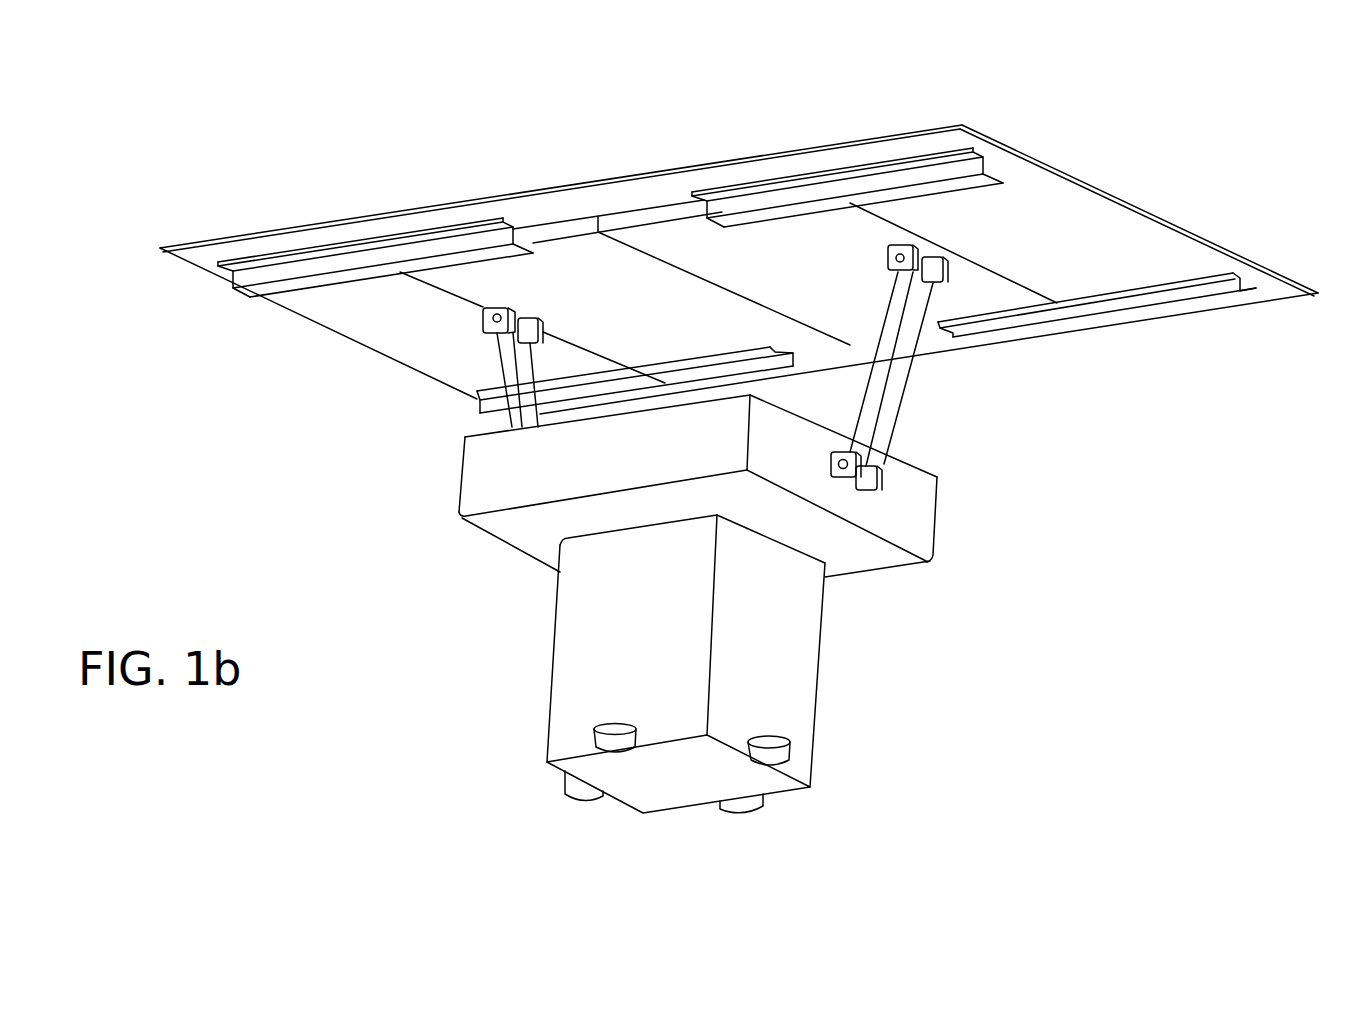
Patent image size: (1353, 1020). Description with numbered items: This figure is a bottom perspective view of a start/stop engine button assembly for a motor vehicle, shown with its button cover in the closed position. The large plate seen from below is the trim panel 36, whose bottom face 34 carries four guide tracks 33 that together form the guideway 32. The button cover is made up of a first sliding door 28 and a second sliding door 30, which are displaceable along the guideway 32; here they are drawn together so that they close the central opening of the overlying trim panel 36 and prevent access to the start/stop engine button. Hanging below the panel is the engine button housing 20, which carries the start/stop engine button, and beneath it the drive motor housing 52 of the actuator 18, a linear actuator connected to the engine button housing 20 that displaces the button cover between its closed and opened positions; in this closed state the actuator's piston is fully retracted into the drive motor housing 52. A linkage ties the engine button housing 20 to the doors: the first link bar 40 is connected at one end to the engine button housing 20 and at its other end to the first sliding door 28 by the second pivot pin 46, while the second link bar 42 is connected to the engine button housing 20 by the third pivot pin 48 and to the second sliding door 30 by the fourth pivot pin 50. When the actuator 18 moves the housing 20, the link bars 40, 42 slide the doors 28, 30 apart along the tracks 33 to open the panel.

The actuator 18 is at (497, 712).
The engine button housing 20 is at (480, 483).
The first sliding door 28 is at (670, 326).
The second sliding door 30 is at (813, 281).
The guideway 32 is at (452, 402).
The guide tracks 33 is at (740, 203).
The bottom face 34 is at (1110, 232).
The trim panel 36 is at (917, 127).
The first link bar 40 is at (507, 365).
The second link bar 42 is at (888, 393).
The second pivot pin 46 is at (499, 315).
The third pivot pin 48 is at (843, 470).
The fourth pivot pin 50 is at (901, 256).
The drive motor housing 52 is at (784, 663).